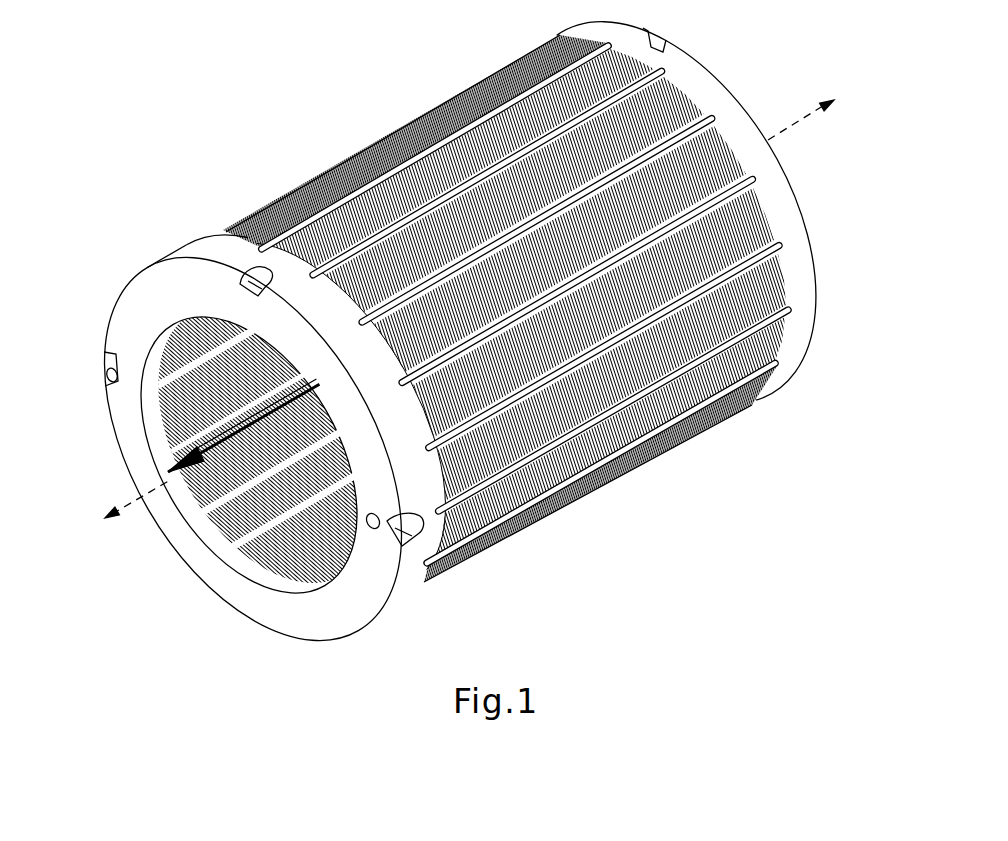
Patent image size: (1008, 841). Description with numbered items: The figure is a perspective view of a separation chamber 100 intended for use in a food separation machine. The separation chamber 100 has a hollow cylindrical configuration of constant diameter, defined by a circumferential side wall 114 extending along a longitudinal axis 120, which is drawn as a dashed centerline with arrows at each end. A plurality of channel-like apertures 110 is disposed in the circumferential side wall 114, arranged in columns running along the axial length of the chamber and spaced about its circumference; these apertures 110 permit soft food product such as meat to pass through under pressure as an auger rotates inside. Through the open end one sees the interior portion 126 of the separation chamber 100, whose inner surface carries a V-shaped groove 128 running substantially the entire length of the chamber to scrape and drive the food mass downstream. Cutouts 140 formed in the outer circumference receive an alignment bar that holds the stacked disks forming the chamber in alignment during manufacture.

The separation chamber 100 is at (338, 80).
The apertures 110 is at (553, 302).
The circumferential side wall 114 is at (214, 246).
The longitudinal axis 120 is at (158, 500).
The interior portion 126 is at (182, 366).
The V-shaped groove 128 is at (186, 458).
The cutouts 140 is at (756, 178).